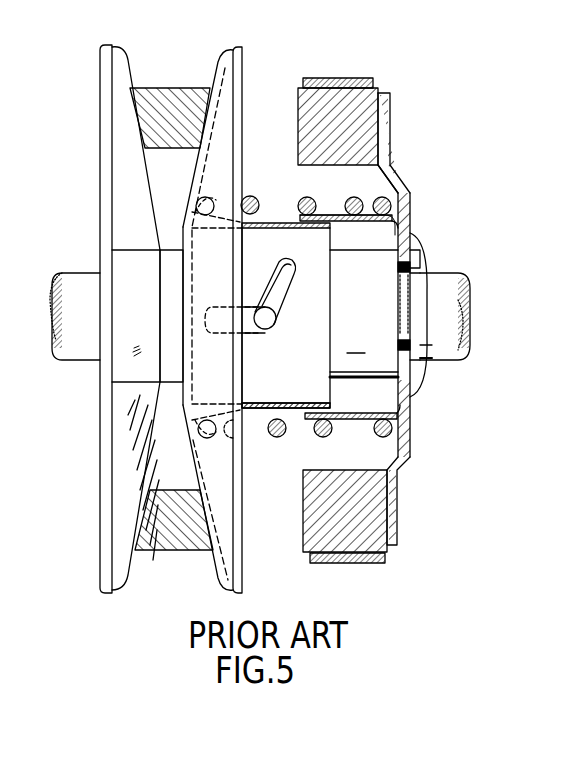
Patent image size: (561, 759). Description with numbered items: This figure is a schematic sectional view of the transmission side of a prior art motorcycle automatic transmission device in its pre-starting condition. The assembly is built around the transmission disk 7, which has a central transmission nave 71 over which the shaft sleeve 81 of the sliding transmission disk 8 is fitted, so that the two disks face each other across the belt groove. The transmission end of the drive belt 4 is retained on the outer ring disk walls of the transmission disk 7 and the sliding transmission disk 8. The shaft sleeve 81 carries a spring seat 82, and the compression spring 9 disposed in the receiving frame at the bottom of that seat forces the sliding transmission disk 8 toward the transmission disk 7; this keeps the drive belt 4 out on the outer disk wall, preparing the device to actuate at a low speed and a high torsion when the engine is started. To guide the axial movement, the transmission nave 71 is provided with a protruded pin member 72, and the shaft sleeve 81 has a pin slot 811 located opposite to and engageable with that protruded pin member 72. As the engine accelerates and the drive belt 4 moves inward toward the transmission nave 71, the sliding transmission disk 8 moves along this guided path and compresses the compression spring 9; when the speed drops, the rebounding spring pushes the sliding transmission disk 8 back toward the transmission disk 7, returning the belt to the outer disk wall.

The drive belt 4 is at (187, 93).
The transmission disk 7 is at (107, 103).
The transmission nave 71 is at (168, 267).
The sliding transmission disk 8 is at (237, 88).
The compression spring 9 is at (252, 196).
The protruded pin member 72 is at (268, 320).
The shaft sleeve 81 is at (318, 245).
The pin slot 811 is at (254, 408).
The spring seat 82 is at (292, 410).